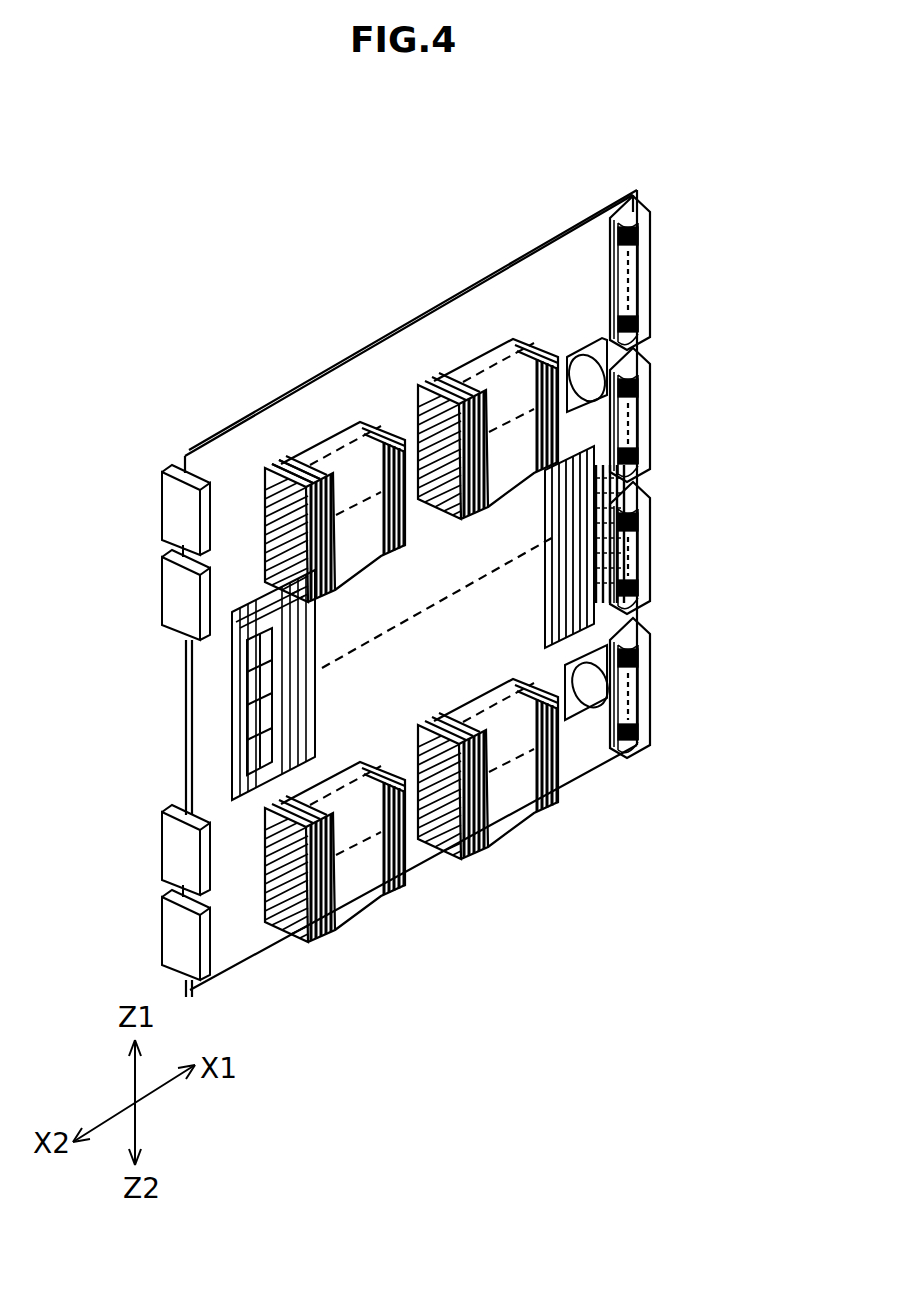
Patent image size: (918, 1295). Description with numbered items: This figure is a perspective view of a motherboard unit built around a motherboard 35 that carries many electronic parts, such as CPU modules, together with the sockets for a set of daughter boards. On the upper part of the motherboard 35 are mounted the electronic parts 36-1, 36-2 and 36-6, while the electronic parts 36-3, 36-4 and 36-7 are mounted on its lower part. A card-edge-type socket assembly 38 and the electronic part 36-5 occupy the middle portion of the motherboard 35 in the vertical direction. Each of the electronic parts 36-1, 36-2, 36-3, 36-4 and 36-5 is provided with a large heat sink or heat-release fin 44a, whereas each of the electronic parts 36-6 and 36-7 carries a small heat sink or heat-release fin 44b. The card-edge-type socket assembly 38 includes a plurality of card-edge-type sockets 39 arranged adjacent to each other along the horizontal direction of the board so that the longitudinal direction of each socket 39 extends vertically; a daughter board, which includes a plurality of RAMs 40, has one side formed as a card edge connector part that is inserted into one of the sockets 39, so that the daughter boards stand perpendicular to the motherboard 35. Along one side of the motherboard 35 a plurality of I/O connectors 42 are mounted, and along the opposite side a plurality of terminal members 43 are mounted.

The motherboard 35 is at (500, 270).
The electronic part 36-1 is at (317, 443).
The electronic part 36-2 is at (470, 348).
The electronic part 36-3 is at (277, 917).
The electronic part 36-4 is at (437, 827).
The electronic part 36-5 is at (613, 460).
The electronic part 36-6 is at (651, 284).
The electronic part 36-7 is at (587, 707).
The card-edge-type socket assembly 38 is at (195, 581).
The card-edge-type socket 39 is at (233, 610).
The RAM 40 is at (255, 740).
The I/O connector 42 is at (643, 293).
The terminal member 43 is at (185, 510).
The large heat sink 44a is at (383, 440).
The small heat sink 44b is at (595, 376).